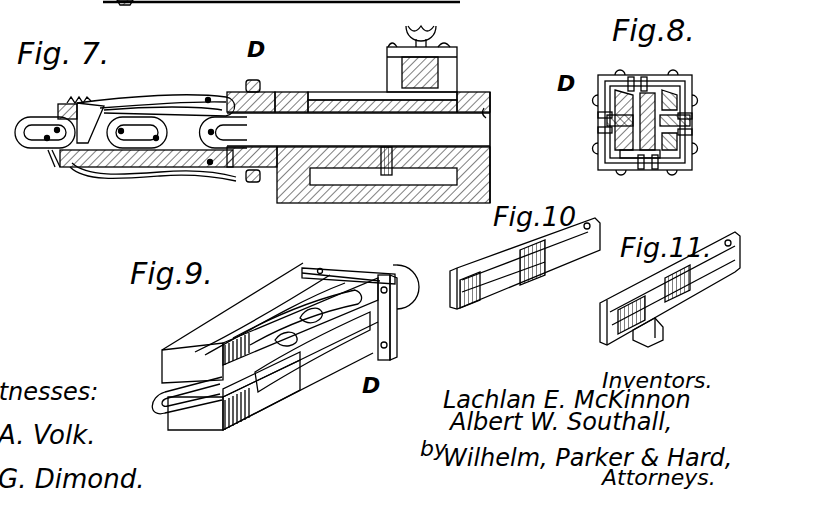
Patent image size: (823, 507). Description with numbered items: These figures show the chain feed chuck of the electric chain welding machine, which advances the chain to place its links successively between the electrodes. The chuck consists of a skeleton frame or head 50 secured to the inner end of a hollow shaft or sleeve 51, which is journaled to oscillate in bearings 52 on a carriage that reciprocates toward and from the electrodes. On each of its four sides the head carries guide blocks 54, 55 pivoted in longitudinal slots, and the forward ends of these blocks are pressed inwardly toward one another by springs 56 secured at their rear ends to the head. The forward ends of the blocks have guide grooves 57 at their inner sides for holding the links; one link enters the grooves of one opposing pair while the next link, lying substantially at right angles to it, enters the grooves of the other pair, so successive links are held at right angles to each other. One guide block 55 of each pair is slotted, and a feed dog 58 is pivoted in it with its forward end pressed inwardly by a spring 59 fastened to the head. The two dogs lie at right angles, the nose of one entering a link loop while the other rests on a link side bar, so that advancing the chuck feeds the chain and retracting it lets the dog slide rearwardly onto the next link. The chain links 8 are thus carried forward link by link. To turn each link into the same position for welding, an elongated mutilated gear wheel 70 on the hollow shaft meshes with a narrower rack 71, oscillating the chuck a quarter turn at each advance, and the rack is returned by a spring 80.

In FIG. 7, the chain link 8 is at (97, 110).
In FIG. 7, the skeleton frame or head 50 is at (235, 93).
In FIG. 8, the skeleton frame or head 50 is at (617, 83).
In FIG. 9, the skeleton frame or head 50 is at (293, 280).
In FIG. 7, the hollow shaft or sleeve 51 is at (487, 112).
In FIG. 9, the hollow shaft or sleeve 51 is at (393, 267).
In FIG. 7, the bearings 52 is at (292, 93).
In FIG. 7, the guide block 54 is at (145, 157).
In FIG. 8, the guide block 54 is at (607, 147).
In FIG. 9, the guide block 54 is at (167, 377).
In FIG. 10, the guide block 54 is at (493, 263).
In FIG. 7, the guide block 55 is at (62, 105).
In FIG. 8, the guide block 55 is at (655, 90).
In FIG. 9, the guide block 55 is at (187, 353).
In FIG. 11, the guide block 55 is at (627, 297).
In FIG. 7, the springs 56 is at (113, 100).
In FIG. 8, the springs 56 is at (633, 78).
In FIG. 9, the springs 56 is at (237, 317).
In FIG. 7, the guide grooves 57 is at (107, 143).
In FIG. 8, the guide grooves 57 is at (620, 167).
In FIG. 9, the guide grooves 57 is at (157, 385).
In FIG. 10, the guide grooves 57 is at (470, 308).
In FIG. 11, the guide grooves 57 is at (603, 340).
In FIG. 7, the feed dog 58 is at (143, 108).
In FIG. 8, the feed dog 58 is at (693, 113).
In FIG. 9, the feed dog 58 is at (307, 290).
In FIG. 11, the feed dog 58 is at (647, 318).
In FIG. 7, the spring 59 is at (167, 91).
In FIG. 8, the spring 59 is at (643, 80).
In FIG. 9, the spring 59 is at (260, 310).
In FIG. 7, the elongated mutilated gear wheel 70 is at (348, 100).
In FIG. 7, the rack 71 is at (453, 63).
In FIG. 7, the spring 80 is at (438, 29).